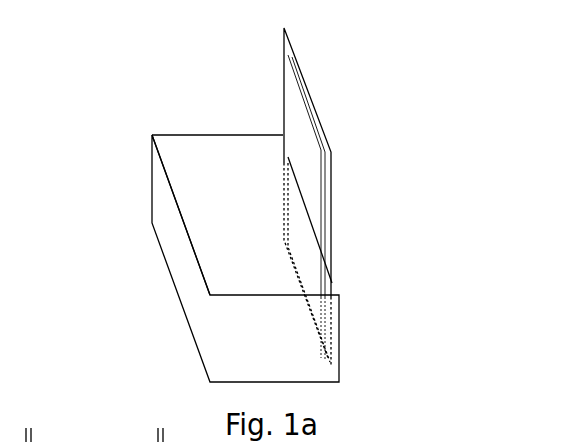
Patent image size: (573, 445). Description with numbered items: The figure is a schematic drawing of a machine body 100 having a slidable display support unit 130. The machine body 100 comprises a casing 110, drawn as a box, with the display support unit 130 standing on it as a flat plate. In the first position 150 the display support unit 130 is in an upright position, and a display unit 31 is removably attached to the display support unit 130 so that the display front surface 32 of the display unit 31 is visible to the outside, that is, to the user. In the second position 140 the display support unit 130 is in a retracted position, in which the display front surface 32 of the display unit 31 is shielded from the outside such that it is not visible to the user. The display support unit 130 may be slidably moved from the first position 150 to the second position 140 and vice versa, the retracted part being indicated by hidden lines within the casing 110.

The machine body 100 is at (170, 59).
The casing 110 is at (152, 180).
The display support unit 130 is at (318, 115).
The first position 150 is at (323, 186).
The second position 140 is at (327, 279).
The display unit 31 is at (318, 163).
The display front surface 32 is at (293, 118).